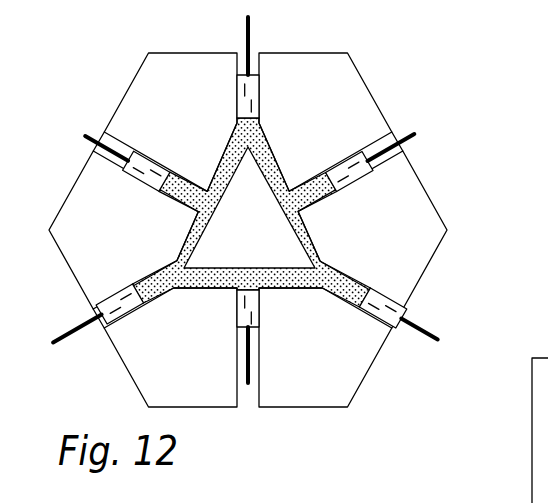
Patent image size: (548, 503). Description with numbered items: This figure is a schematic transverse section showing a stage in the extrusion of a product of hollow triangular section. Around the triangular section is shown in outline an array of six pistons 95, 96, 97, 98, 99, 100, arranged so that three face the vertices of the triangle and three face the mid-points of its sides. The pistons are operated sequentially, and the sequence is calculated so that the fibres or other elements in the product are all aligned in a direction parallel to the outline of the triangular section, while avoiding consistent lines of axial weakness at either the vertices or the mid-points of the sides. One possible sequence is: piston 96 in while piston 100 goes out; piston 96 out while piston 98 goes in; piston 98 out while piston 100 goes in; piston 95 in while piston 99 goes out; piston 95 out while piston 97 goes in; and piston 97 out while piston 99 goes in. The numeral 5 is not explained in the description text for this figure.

The electrical connector assembly 5 is at (390, 70).
The piston 95 is at (140, 178).
The piston 96 is at (256, 92).
The piston 97 is at (370, 182).
The piston 98 is at (385, 302).
The piston 99 is at (259, 317).
The piston 100 is at (106, 303).